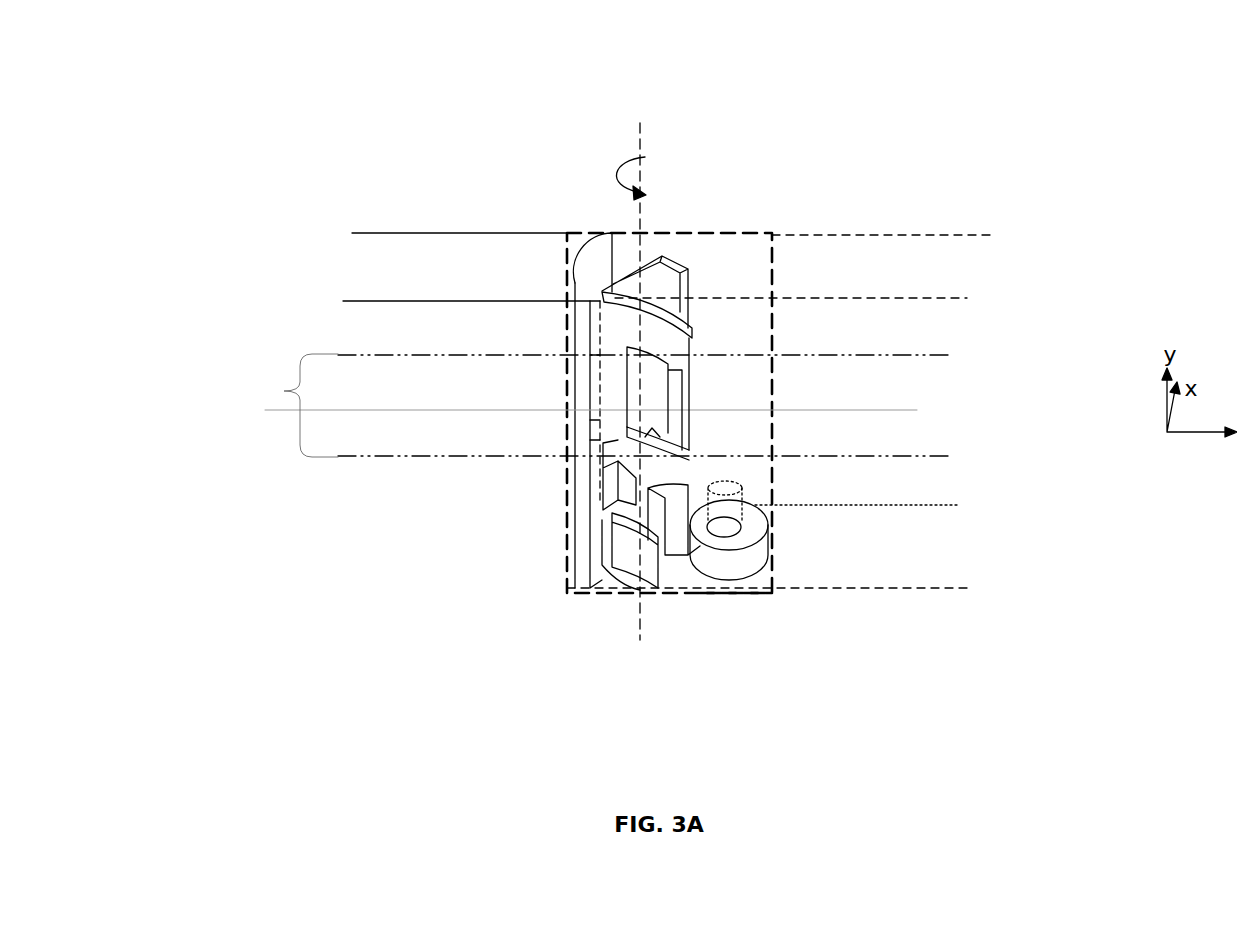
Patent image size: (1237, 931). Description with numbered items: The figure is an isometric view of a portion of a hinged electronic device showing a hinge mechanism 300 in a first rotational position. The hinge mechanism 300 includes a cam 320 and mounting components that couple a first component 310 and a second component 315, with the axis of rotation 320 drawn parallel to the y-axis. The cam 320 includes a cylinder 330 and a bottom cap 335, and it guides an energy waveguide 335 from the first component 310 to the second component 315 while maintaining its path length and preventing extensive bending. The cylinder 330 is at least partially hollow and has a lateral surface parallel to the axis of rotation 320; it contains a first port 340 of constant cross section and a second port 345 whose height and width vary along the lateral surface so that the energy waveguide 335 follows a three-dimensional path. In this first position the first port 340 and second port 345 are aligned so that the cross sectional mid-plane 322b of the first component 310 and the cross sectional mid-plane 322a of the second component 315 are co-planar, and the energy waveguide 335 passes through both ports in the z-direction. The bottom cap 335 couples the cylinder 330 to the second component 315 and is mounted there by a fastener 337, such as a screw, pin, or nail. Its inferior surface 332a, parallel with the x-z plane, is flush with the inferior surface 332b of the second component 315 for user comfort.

The hinge mechanism 300 is at (565, 285).
The first component 310 is at (402, 287).
The second component 315 is at (853, 257).
The cam 320 is at (450, 632).
The cross sectional mid-plane of the second component 322a is at (873, 403).
The cross sectional mid-plane of the first component 322b is at (360, 410).
The cylinder 330 is at (628, 282).
The inferior surface of the bottom cap 332a is at (735, 598).
The inferior surface of the second component 332b is at (992, 590).
The energy waveguide 335 is at (625, 563).
The fastener 337 is at (725, 523).
The first port 340 is at (567, 590).
The second port 345 is at (653, 398).